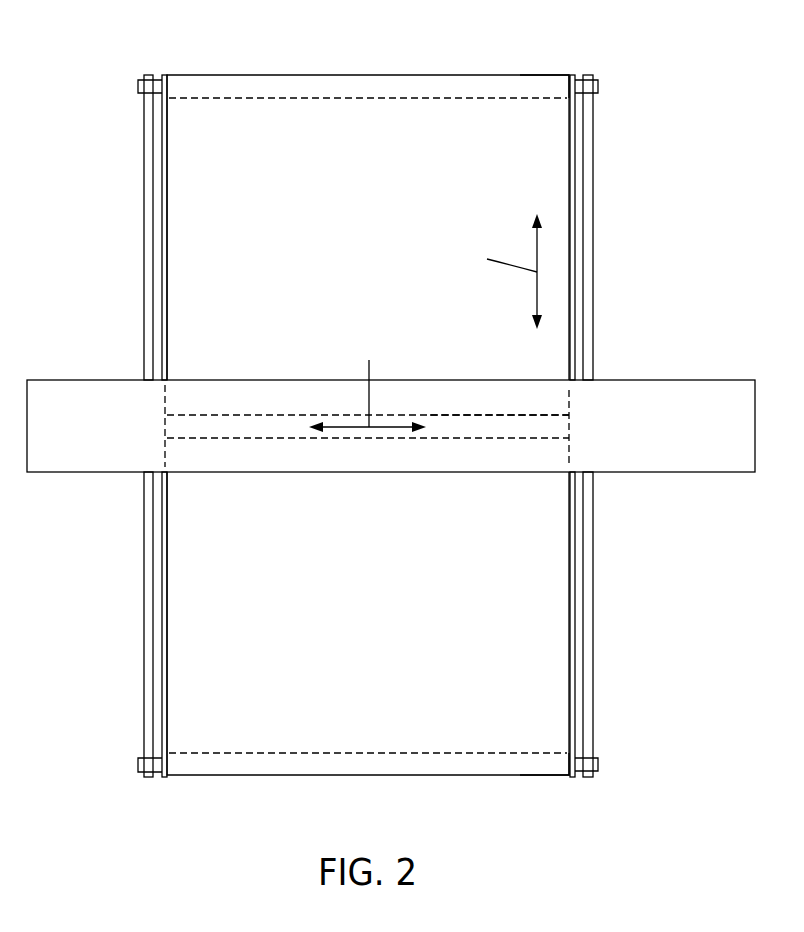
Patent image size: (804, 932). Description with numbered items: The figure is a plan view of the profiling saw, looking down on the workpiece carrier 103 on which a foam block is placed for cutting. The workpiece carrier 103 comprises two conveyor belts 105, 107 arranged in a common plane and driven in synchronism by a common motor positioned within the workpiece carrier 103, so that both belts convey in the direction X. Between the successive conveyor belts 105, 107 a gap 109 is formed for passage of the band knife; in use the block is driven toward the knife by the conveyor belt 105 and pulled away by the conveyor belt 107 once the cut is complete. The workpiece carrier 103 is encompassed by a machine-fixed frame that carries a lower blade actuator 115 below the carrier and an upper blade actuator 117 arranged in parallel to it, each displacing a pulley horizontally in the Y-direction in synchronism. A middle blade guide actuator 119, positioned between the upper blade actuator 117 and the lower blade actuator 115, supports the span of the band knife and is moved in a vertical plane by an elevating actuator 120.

The workpiece carrier 103 is at (606, 211).
The conveyor belt 105 is at (548, 685).
The conveyor belt 107 is at (548, 138).
The gap 109 is at (490, 416).
The lower blade actuator 115 is at (528, 767).
The upper blade actuator 117 is at (535, 85).
The middle blade guide actuator 119 is at (679, 395).
The elevating actuator 120 is at (592, 160).